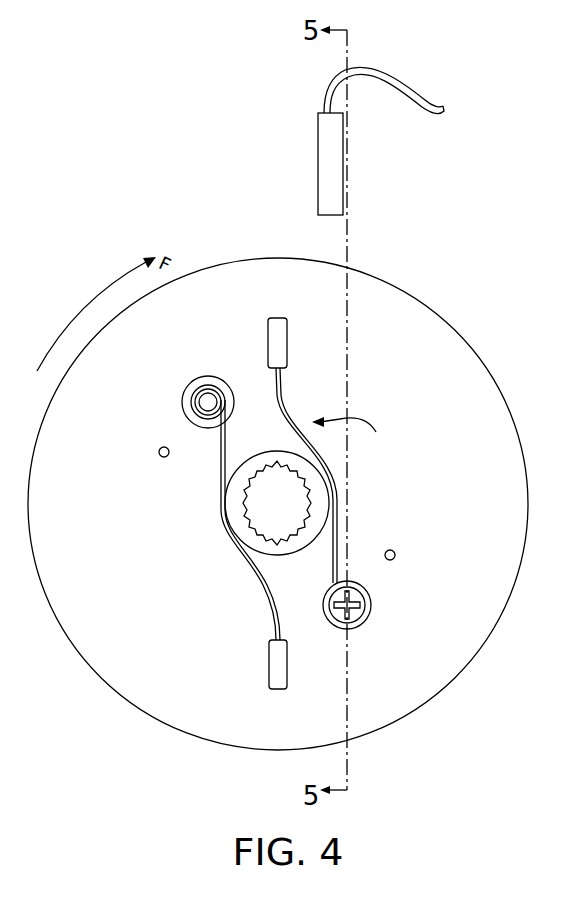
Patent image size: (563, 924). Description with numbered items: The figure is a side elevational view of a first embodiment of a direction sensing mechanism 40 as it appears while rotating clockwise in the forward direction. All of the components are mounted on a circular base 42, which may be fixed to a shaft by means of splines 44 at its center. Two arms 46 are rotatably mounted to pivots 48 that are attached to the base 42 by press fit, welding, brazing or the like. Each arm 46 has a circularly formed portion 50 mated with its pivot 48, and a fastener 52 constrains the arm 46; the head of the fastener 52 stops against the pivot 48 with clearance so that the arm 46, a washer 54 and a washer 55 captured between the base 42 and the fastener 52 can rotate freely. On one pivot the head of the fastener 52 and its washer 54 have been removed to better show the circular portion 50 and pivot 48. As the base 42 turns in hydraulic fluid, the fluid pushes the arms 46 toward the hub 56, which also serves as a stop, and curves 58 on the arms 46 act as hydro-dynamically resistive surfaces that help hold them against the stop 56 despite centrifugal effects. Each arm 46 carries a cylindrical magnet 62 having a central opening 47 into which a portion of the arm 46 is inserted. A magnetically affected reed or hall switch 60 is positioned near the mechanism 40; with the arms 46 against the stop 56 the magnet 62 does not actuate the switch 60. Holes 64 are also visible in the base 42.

The direction sensing mechanism 40 is at (484, 278).
The circular base 42 is at (459, 506).
The splines 44 is at (240, 540).
The arms 46 is at (220, 463).
The central opening 47 is at (270, 378).
The pivots 48 is at (220, 417).
The circularly formed portion 50 is at (193, 384).
The fastener 52 is at (358, 613).
The washer 54 is at (331, 625).
The washer 55 is at (208, 376).
The hub 56 is at (262, 560).
The curves 58 is at (354, 436).
The switch 60 is at (318, 162).
The magnet 62 is at (288, 345).
The hole 64 is at (159, 452).